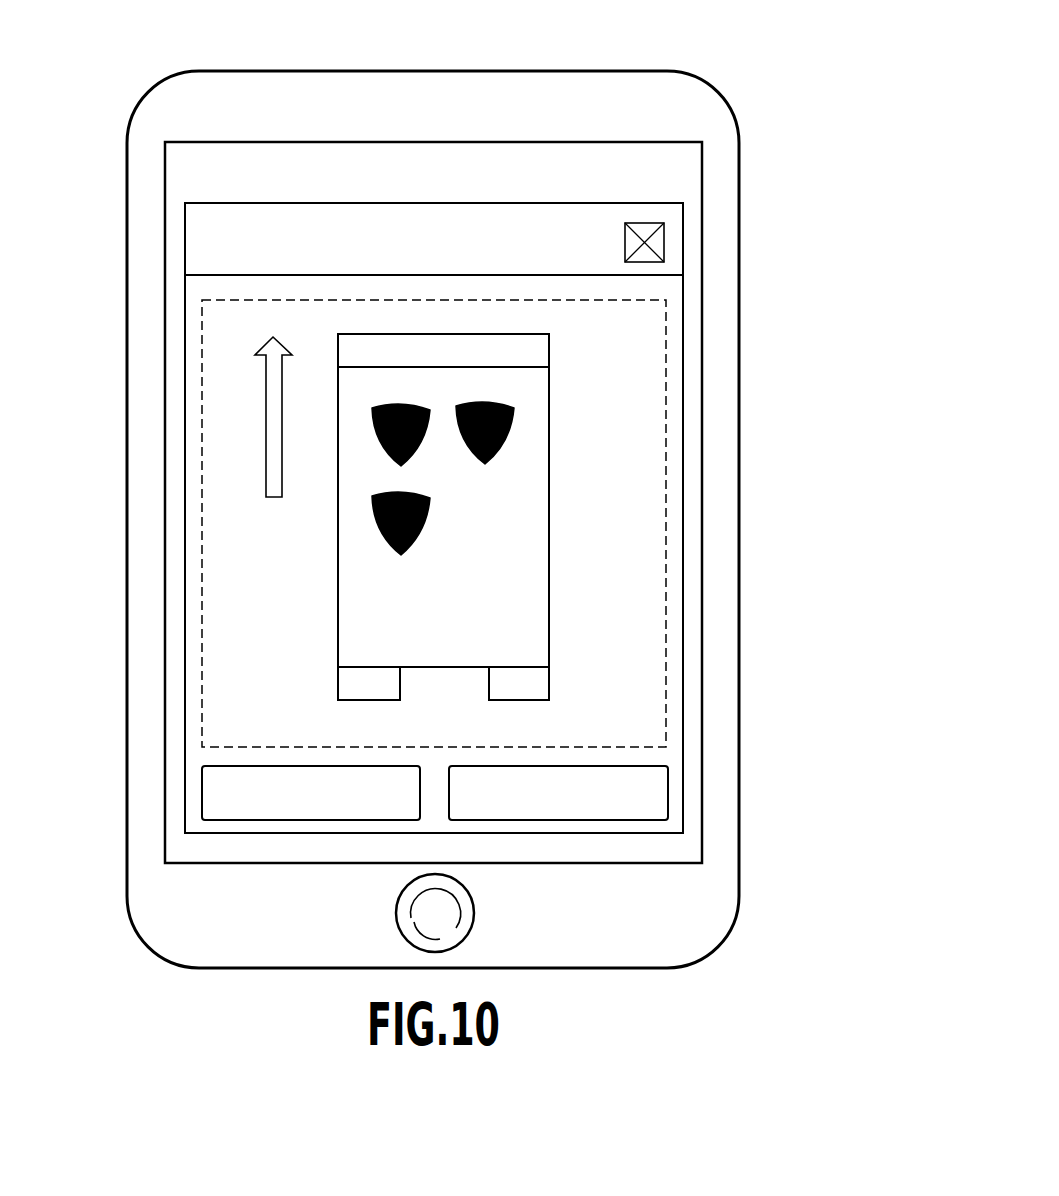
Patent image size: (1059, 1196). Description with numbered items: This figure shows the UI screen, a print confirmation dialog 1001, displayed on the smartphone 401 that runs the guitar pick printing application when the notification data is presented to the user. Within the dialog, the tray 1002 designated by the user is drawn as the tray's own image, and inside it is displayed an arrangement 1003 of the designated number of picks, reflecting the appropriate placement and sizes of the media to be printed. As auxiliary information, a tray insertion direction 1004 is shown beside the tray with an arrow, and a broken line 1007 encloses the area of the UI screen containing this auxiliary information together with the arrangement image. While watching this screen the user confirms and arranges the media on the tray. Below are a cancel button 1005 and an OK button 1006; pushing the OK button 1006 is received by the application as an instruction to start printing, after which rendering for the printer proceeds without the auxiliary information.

The smartphone 401 is at (603, 70).
The print confirmation dialog 1001 is at (627, 180).
The tray 1002 is at (588, 458).
The arrangement of picks 1003 is at (453, 492).
The tray insertion direction 1004 is at (265, 440).
The cancel button 1005 is at (295, 765).
The OK button 1006 is at (603, 765).
The broken line 1007 is at (203, 603).